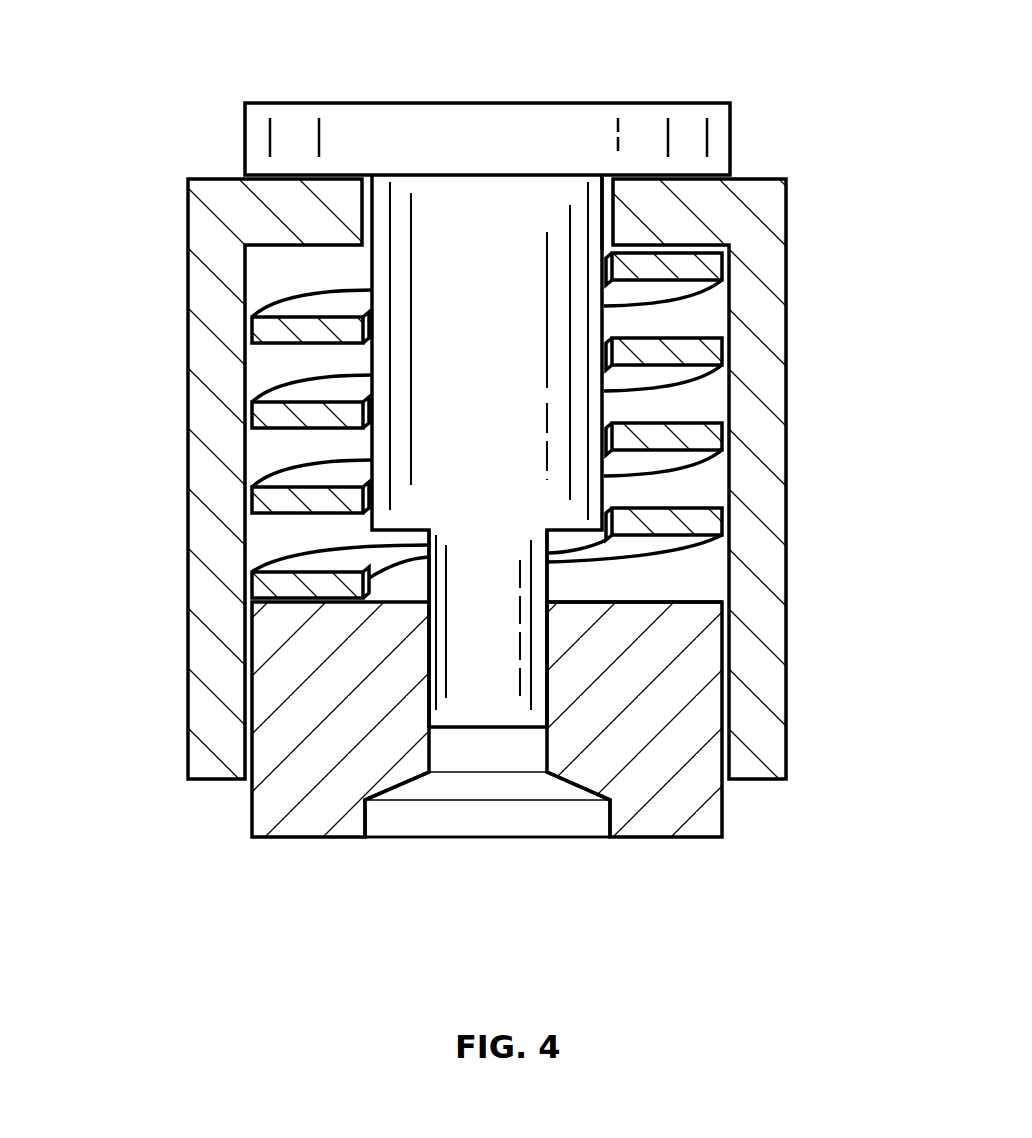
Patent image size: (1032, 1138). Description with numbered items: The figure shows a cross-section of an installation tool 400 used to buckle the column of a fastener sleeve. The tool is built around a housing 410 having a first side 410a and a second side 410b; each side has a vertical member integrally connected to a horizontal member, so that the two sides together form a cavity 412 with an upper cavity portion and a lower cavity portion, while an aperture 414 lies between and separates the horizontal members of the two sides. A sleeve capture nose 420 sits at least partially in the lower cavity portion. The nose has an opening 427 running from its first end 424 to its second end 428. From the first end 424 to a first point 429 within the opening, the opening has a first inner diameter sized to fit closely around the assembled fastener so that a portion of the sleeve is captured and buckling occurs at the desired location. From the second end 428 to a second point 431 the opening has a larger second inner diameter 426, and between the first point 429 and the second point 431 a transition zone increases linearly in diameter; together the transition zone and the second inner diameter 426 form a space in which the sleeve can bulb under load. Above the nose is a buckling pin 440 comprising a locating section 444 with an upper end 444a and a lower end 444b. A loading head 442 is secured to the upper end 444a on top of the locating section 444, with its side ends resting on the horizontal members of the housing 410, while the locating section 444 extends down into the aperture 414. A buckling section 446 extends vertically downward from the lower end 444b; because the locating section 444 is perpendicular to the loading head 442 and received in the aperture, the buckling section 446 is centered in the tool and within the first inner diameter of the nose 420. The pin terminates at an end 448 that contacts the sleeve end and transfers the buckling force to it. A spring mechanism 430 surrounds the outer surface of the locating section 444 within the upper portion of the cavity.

The installation tool 400 is at (800, 88).
The housing 410 is at (487, 479).
The first side 410a is at (198, 252).
The second side 410b is at (773, 262).
The cavity 412 is at (480, 425).
The aperture 414 is at (612, 183).
The sleeve capture nose 420 is at (318, 752).
The first end 424 is at (655, 600).
The second inner diameter 426 is at (367, 827).
The opening 427 is at (513, 832).
The second end 428 is at (722, 713).
The first point 429 is at (550, 772).
The spring mechanism 430 is at (690, 437).
The second point 431 is at (487, 876).
The buckling pin 440 is at (451, 109).
The loading head 442 is at (250, 128).
The locating section 444 is at (372, 385).
The upper end 444a is at (428, 210).
The lower end 444b is at (296, 623).
The buckling section 446 is at (462, 627).
The end 448 is at (475, 730).